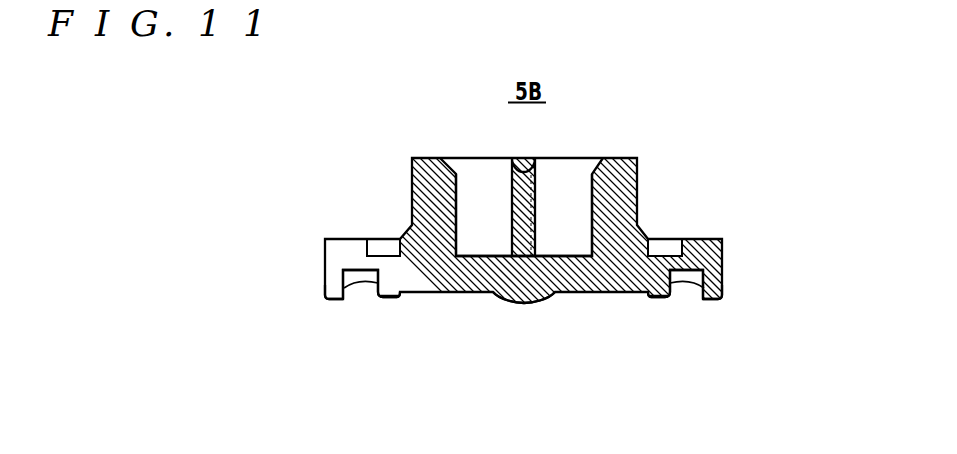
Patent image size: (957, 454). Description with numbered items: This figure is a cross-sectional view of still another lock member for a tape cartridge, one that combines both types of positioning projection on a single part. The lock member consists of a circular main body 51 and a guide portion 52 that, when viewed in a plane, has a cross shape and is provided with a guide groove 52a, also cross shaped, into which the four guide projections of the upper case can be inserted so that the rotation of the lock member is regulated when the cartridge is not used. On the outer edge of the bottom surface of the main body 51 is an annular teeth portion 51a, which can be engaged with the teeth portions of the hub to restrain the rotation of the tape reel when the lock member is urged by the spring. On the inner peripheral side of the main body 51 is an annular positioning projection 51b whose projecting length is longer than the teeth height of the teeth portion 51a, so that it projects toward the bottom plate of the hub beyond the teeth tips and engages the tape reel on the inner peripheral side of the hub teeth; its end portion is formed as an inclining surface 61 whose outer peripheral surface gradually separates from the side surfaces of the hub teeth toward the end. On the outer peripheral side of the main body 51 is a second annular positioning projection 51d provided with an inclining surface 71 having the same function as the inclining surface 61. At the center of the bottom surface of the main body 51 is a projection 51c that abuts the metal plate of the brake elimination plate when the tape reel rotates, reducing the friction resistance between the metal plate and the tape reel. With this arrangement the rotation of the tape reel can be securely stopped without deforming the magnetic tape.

The main body 51 is at (722, 263).
The teeth portion 51a is at (360, 277).
The positioning projection 51b is at (392, 298).
The projection 51c is at (527, 304).
The positioning projection 51d is at (325, 296).
The guide portion 52 is at (637, 195).
The guide groove 52a is at (479, 206).
The inclining surface 61 is at (383, 298).
The inclining surface 71 is at (343, 298).